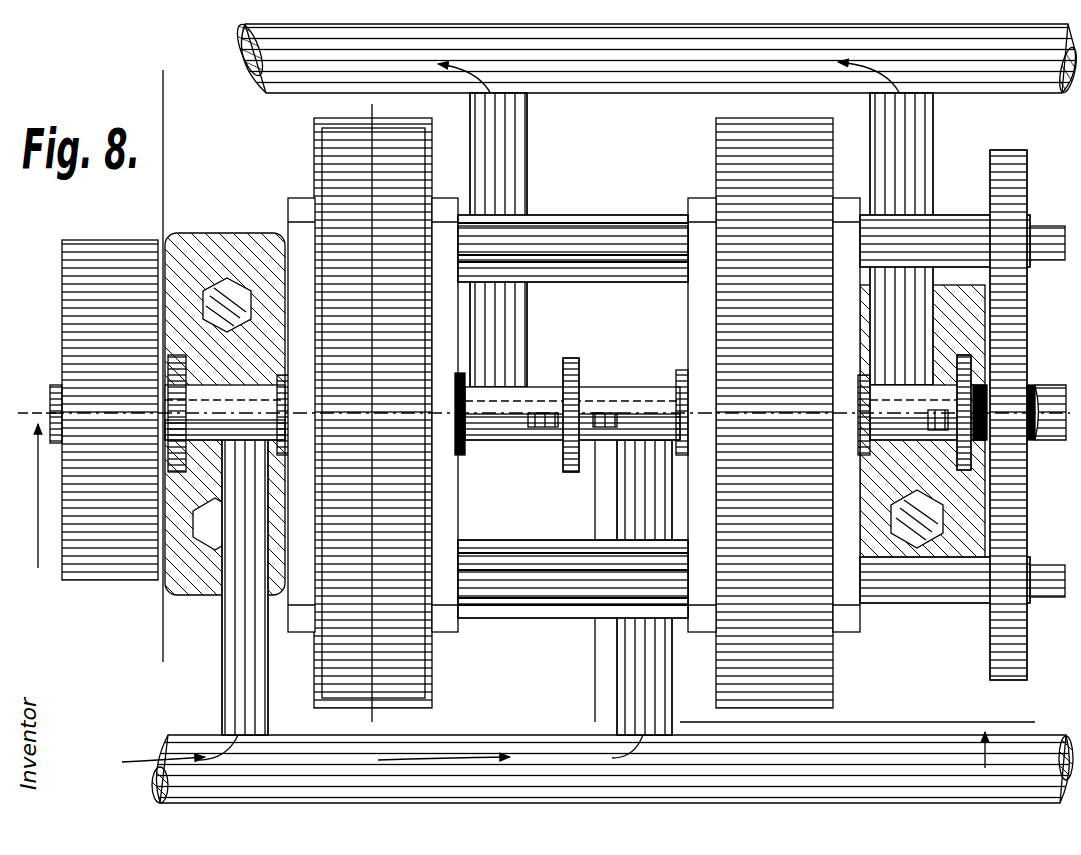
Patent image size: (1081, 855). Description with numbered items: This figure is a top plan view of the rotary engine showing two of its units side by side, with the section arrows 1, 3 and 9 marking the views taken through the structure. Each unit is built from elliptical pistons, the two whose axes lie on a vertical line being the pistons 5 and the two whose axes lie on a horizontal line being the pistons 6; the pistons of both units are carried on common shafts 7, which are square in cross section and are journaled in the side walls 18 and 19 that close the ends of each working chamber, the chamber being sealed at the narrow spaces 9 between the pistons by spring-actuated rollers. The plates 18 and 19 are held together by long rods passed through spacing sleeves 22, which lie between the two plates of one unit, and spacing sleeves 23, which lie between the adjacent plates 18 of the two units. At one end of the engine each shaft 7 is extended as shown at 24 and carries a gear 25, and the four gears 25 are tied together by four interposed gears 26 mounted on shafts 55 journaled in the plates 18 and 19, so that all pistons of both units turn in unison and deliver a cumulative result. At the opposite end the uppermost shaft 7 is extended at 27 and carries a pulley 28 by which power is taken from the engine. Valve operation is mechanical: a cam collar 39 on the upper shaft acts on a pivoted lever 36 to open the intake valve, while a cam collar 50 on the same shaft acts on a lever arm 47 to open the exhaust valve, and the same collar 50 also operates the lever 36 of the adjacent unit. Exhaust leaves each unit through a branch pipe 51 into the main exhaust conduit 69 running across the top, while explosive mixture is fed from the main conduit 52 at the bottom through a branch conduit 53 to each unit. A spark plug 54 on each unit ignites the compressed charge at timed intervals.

The section line 1- 1 is at (158, 85).
The section line 3- 3 is at (520, 598).
The narrow spaces 9 is at (382, 108).
The pistons 5 is at (425, 352).
The pistons 6 is at (352, 118).
The shafts 7 is at (612, 380).
The side walls 18 is at (442, 198).
The side walls 19 is at (300, 198).
The spacing sleeve 22 is at (358, 270).
The spacing sleeve 23 is at (578, 275).
The shaft extension 24 is at (1040, 250).
The gear 25 is at (1030, 345).
The interposed gear 26 is at (1022, 190).
The shaft extension 27 is at (58, 400).
The pulley 28 is at (110, 390).
The lever 36 is at (188, 440).
The cam collar 39 is at (177, 355).
The lever arm 47 is at (540, 442).
The cam collar 50 is at (560, 355).
The branch pipe 51 is at (527, 178).
The main conduit 52 is at (188, 745).
The branch conduit 53 is at (228, 634).
The spark plug 54 is at (255, 240).
The shafts 55 is at (566, 215).
The main exhaust conduit 69 is at (641, 95).